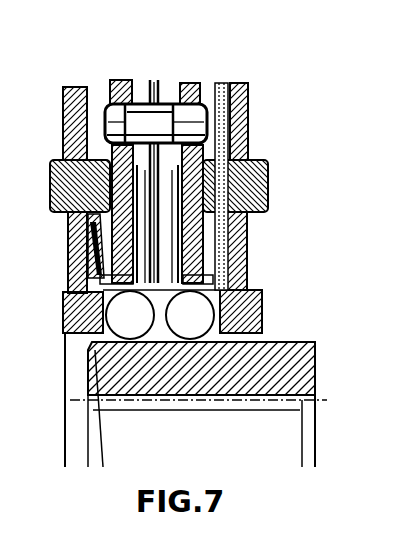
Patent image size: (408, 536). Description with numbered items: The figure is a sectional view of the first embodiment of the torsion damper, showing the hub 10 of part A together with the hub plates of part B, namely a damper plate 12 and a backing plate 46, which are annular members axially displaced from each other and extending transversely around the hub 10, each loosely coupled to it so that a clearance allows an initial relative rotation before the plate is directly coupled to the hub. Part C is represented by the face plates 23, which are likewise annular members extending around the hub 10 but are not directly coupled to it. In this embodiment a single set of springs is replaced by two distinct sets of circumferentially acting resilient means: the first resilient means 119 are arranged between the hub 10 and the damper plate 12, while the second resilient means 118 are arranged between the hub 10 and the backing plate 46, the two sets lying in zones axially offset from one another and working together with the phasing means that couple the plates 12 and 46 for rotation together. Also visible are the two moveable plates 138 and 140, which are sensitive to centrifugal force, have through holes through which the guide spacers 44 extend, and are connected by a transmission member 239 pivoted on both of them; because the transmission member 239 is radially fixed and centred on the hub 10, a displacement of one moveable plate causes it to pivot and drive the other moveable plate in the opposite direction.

The hub 10 is at (293, 361).
The damper plate 12 is at (189, 93).
The face plate 23 is at (63, 110).
The guide spacer 44 is at (152, 103).
The backing plate 46 is at (113, 103).
The second resilient means 118 is at (133, 332).
The first resilient means 119 is at (193, 332).
The moveable plate 138 is at (248, 133).
The moveable plate 140 is at (72, 232).
The transmission member 239 is at (248, 107).